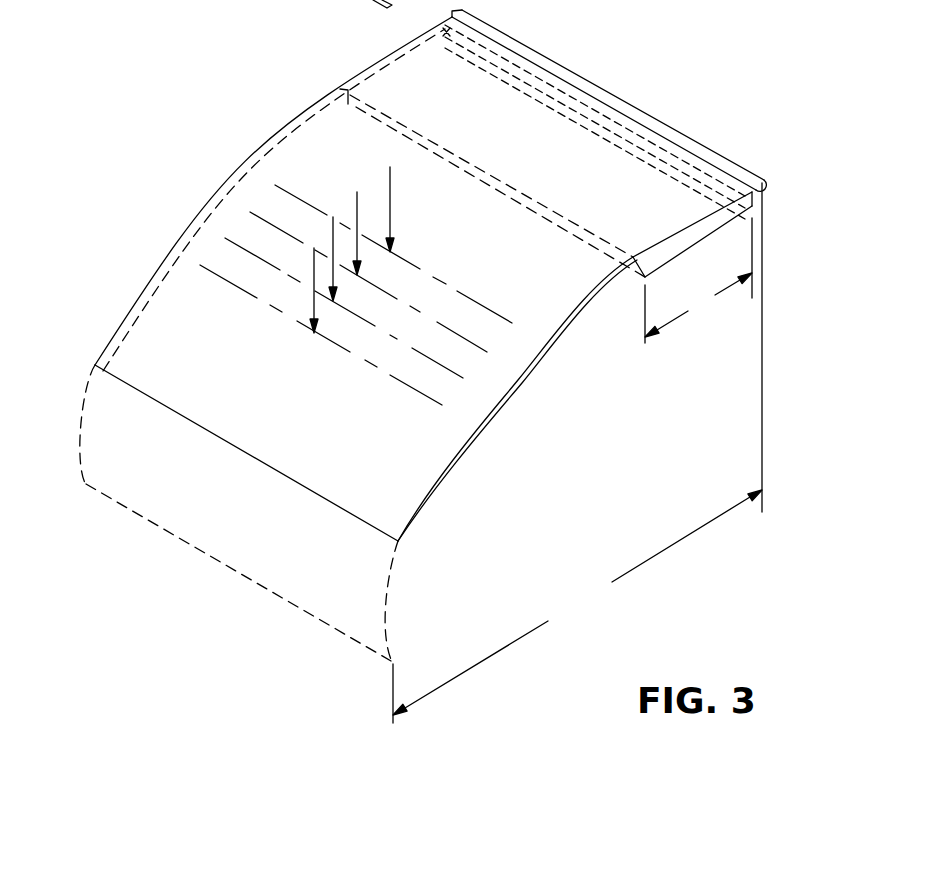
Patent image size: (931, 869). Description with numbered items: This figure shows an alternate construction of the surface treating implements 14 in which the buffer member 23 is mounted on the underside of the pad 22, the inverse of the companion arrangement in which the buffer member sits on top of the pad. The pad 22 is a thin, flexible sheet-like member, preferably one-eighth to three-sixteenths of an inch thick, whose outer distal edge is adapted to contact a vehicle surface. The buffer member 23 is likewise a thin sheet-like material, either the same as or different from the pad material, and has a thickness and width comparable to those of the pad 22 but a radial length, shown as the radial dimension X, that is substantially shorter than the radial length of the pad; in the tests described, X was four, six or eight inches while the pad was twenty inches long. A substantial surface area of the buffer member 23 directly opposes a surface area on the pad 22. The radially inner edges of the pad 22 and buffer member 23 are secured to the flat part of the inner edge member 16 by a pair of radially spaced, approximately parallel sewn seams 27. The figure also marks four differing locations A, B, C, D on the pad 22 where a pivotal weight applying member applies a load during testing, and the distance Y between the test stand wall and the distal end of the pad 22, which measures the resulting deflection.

The surface treating implements 14 is at (488, 448).
The inner edge member 16 is at (778, 174).
The pad 22 is at (547, 343).
The buffer member 23 is at (612, 104).
The sewn seams 27 is at (520, 66).
The weight application location A is at (393, 245).
The weight application location B is at (368, 272).
The weight application location C is at (344, 297).
The weight application location D is at (321, 326).
The radial dimension of the buffer member X is at (698, 280).
The deflection distance Y is at (577, 606).